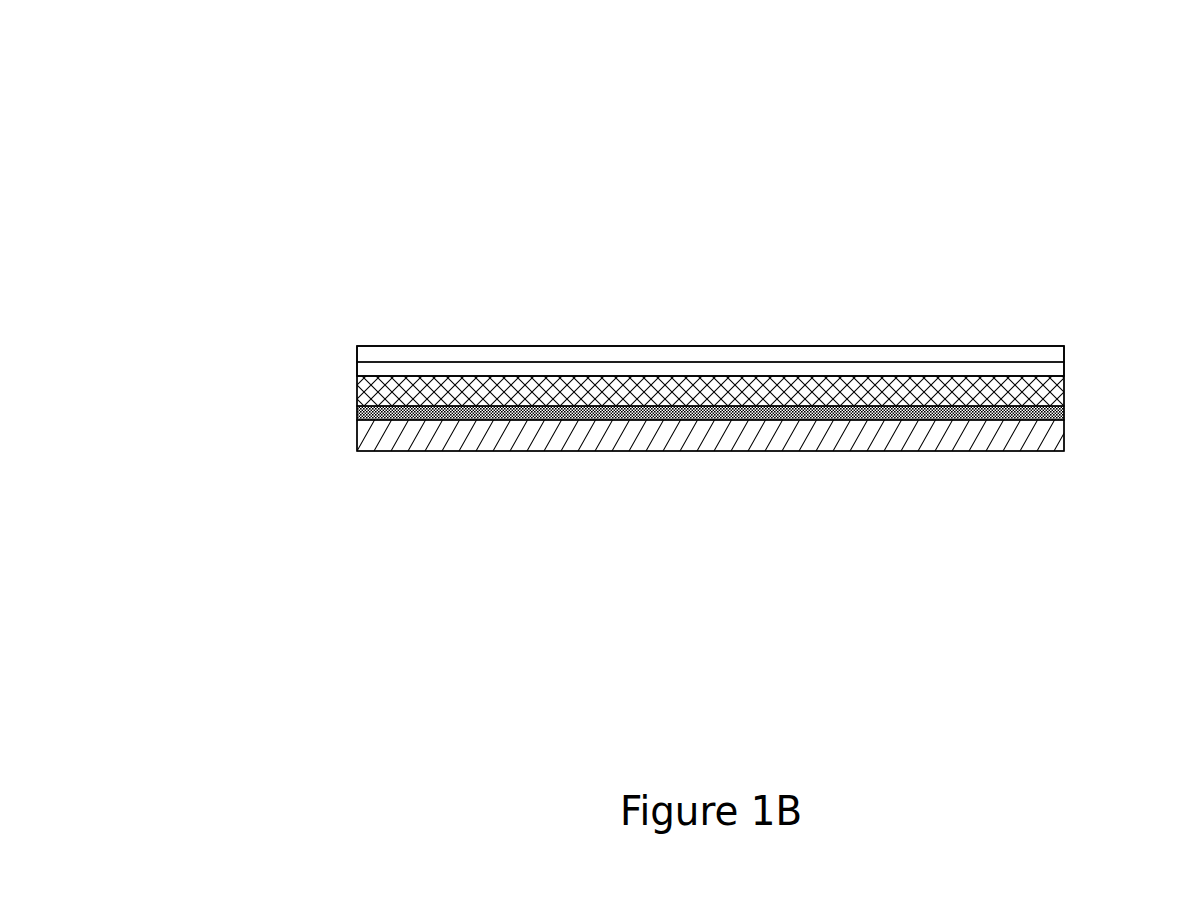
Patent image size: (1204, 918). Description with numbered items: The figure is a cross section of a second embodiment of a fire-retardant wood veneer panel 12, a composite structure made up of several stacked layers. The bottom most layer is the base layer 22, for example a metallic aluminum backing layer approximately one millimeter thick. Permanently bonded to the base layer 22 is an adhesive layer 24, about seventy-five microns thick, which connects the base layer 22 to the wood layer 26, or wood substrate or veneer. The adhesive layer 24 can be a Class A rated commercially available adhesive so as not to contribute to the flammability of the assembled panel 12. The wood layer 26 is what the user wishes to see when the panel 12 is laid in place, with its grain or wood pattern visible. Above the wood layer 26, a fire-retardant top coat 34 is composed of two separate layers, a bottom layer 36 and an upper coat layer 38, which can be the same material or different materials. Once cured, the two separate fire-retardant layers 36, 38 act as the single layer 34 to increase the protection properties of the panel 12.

The fire-retardant wood veneer panel 12 is at (230, 88).
The base layer 22 is at (356, 443).
The adhesive layer 24 is at (356, 413).
The wood layer 26 is at (356, 392).
The fire-retardant top coat 34 is at (1078, 348).
The bottom layer 36 is at (1067, 372).
The upper coat layer 38 is at (1067, 352).